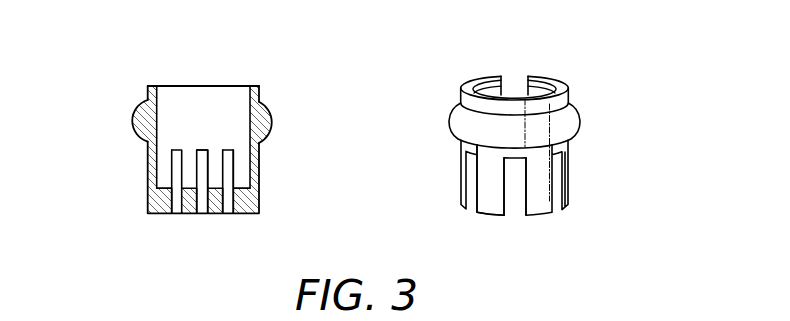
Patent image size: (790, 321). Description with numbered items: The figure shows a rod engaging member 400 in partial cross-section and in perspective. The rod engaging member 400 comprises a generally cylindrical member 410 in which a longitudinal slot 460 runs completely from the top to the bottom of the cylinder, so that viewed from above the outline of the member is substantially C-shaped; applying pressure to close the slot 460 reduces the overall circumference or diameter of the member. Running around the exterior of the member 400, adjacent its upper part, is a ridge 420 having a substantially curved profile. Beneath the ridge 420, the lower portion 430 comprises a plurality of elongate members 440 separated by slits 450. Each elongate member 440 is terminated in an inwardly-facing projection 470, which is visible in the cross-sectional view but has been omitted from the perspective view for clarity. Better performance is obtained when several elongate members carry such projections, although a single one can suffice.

The rod engaging member 400 is at (124, 84).
The generally cylindrical member 410 is at (260, 97).
The ridge 420 is at (273, 118).
The lower portion 430 is at (142, 148).
The elongate member 440 is at (185, 215).
The slit 450 is at (205, 215).
The longitudinal slot 460 is at (515, 83).
The inwardly-facing projection 470 is at (240, 215).